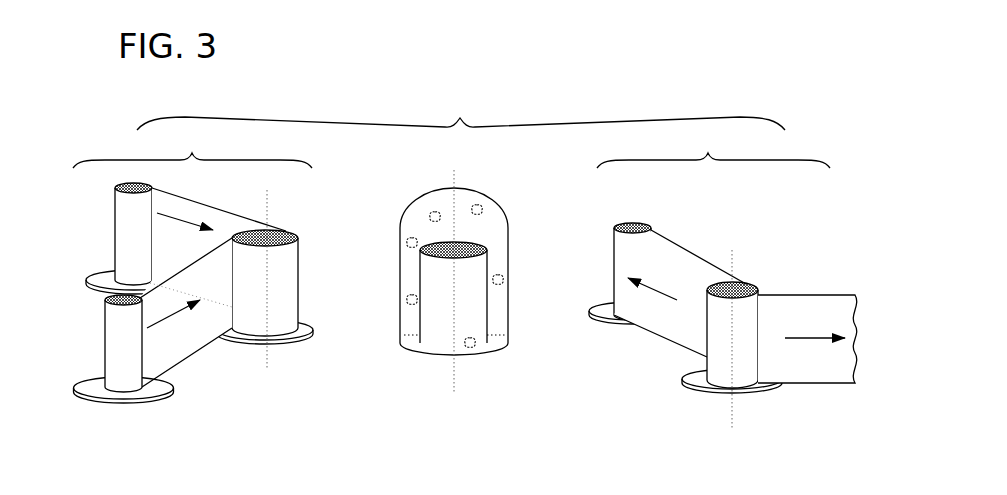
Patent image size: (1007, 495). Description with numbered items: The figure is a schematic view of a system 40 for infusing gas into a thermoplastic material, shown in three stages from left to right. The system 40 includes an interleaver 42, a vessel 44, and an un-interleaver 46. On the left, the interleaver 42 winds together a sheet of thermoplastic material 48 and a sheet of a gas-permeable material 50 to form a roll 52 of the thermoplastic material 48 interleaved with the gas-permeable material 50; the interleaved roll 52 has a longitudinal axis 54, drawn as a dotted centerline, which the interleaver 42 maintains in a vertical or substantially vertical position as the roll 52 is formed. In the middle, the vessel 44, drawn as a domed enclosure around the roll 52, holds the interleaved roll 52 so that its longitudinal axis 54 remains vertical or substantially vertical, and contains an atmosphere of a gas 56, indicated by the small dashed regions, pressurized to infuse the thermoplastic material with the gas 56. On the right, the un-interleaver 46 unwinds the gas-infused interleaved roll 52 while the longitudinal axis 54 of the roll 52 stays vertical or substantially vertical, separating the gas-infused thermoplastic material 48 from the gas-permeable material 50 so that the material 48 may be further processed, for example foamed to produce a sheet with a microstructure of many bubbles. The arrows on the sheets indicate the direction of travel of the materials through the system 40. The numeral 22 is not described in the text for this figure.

The system 40 is at (461, 113).
The interleaver 42 is at (192, 151).
The vessel 44 is at (477, 190).
The un-interleaver 46 is at (713, 151).
The sheet of thermoplastic material 48 is at (105, 341).
The sheet of gas-permeable material 50 is at (115, 212).
The interleaved roll 52 is at (283, 320).
The longitudinal axis 54 is at (262, 354).
The gas 56 is at (430, 215).
The shell 22 is at (400, 345).